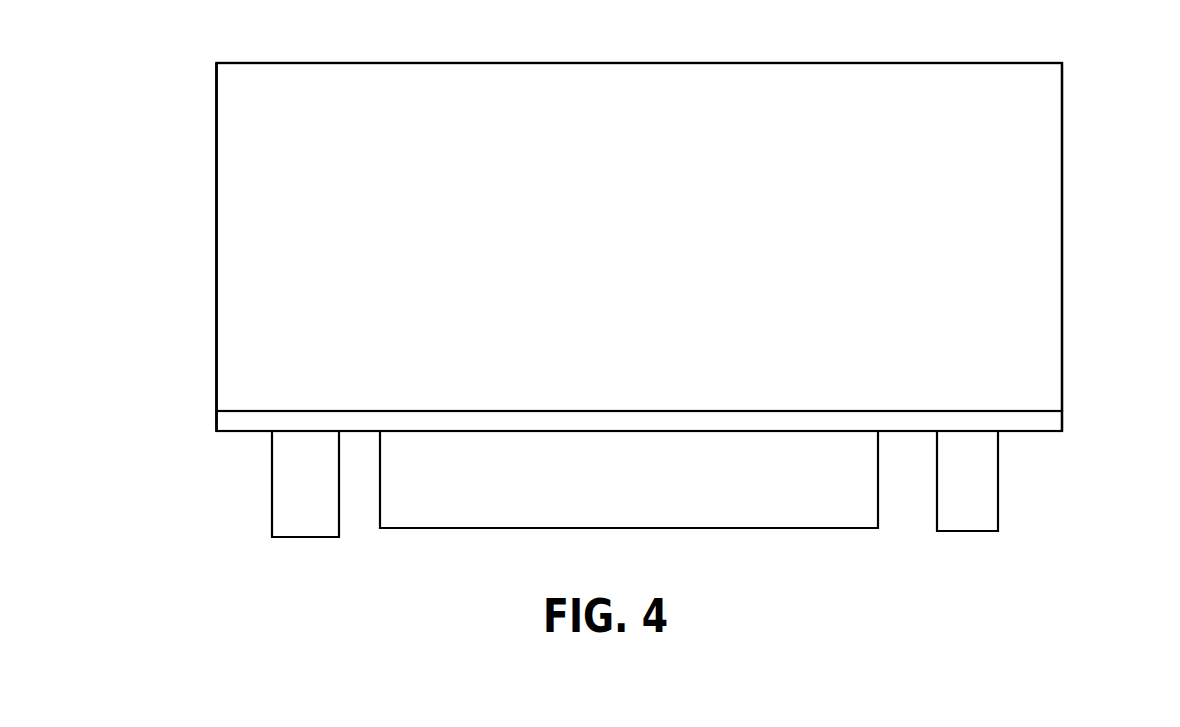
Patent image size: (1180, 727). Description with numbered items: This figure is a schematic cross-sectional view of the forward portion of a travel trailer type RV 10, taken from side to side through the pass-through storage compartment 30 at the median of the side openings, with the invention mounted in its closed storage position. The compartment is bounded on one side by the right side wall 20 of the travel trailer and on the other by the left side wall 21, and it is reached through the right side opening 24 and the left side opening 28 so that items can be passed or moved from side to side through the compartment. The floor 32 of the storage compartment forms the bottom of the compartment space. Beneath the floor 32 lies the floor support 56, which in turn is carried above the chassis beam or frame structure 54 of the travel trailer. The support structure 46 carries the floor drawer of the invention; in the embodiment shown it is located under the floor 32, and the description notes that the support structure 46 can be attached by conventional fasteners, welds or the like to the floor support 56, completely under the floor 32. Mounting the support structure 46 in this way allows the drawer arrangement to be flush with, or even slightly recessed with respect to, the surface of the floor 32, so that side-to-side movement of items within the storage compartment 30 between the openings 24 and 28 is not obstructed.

The travel trailer type RV 10 is at (172, 122).
The right side wall of the travel trailer 20 is at (1062, 115).
The left side wall of the travel trailer 21 is at (217, 127).
The right side opening to the storage compartment 24 is at (1085, 300).
The left side opening for the storage compartment 28 is at (192, 313).
The pass-through storage compartment 30 is at (654, 220).
The floor of the storage compartment 32 is at (302, 410).
The support structure 46 is at (524, 493).
The chassis beam or frame structure for travel trailer 54 is at (307, 508).
The floor support 56 is at (245, 422).